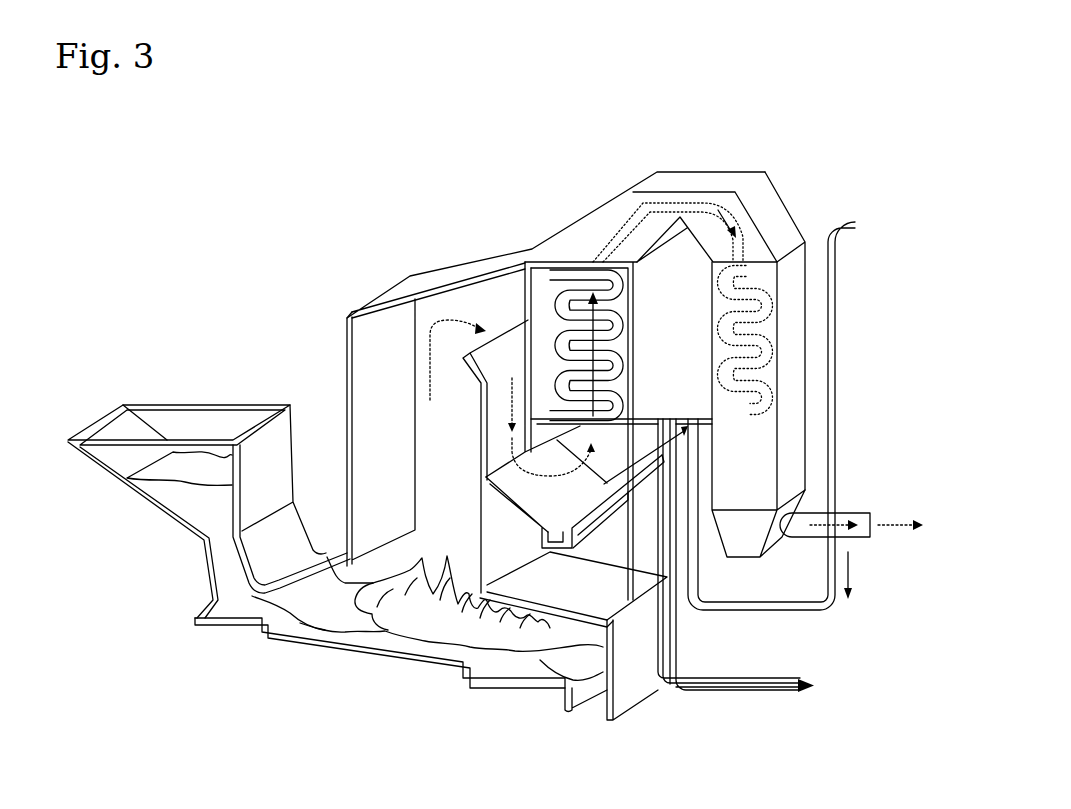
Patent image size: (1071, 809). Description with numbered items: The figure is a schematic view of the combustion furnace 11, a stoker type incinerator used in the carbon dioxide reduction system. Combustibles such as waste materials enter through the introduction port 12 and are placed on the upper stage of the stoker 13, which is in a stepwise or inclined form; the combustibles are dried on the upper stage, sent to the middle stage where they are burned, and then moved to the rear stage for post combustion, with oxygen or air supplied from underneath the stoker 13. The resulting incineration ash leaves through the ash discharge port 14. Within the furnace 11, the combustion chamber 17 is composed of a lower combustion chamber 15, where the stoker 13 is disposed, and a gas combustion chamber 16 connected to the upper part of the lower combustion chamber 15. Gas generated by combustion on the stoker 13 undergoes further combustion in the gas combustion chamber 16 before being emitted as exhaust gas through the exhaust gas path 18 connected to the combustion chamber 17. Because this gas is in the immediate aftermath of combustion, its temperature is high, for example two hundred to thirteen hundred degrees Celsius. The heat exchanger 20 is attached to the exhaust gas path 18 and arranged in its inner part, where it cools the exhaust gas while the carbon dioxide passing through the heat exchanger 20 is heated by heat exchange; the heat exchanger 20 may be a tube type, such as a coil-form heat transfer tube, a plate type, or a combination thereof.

The combustion furnace 11 is at (431, 176).
The introduction port 12 is at (112, 428).
The stoker 13 is at (313, 620).
The ash discharge port 14 is at (589, 686).
The lower combustion chamber 15 is at (410, 582).
The gas combustion chamber 16 is at (440, 460).
The combustion chamber 17 is at (322, 245).
The exhaust gas path 18 is at (762, 277).
The heat exchanger 20 is at (745, 268).